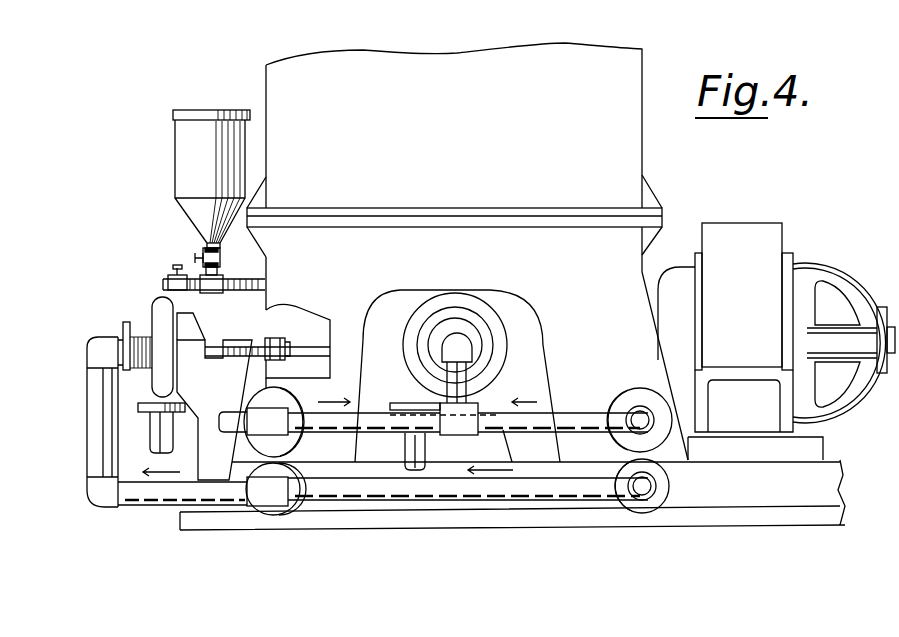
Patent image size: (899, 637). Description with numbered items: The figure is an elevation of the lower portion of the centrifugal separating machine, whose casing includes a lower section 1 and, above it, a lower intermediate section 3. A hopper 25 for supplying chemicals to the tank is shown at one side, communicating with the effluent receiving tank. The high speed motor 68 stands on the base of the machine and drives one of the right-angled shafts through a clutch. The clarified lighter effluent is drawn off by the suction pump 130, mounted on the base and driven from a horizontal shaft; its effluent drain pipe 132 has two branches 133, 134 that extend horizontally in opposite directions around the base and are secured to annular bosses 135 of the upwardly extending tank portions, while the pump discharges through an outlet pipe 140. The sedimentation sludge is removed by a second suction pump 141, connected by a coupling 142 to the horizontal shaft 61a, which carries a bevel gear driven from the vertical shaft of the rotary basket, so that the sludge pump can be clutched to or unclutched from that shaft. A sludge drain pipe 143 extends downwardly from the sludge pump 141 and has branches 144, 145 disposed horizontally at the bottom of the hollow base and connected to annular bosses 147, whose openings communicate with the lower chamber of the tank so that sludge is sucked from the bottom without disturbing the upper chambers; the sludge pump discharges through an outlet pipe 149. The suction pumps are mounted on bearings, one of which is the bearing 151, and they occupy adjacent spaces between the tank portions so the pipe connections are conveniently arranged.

The lower section 1 is at (512, 378).
The lower intermediate section 3 is at (454, 150).
The hopper 25 is at (187, 166).
The horizontal shaft 61a is at (338, 290).
The high speed motor 68 is at (795, 327).
The suction pump 130 is at (490, 272).
The effluent drain pipe 132 is at (487, 385).
The branch 133 is at (590, 388).
The branch 134 is at (356, 414).
The annular boss 135 is at (640, 393).
The outlet pipe 140 is at (425, 455).
The suction pump 141 is at (159, 300).
The coupling 142 is at (275, 340).
The sludge drain pipe 143 is at (97, 398).
The branch 144 is at (383, 499).
The branch 145 is at (168, 480).
The annular boss 147 is at (665, 492).
The outlet pipe 149 is at (158, 433).
The bearing 151 is at (214, 410).